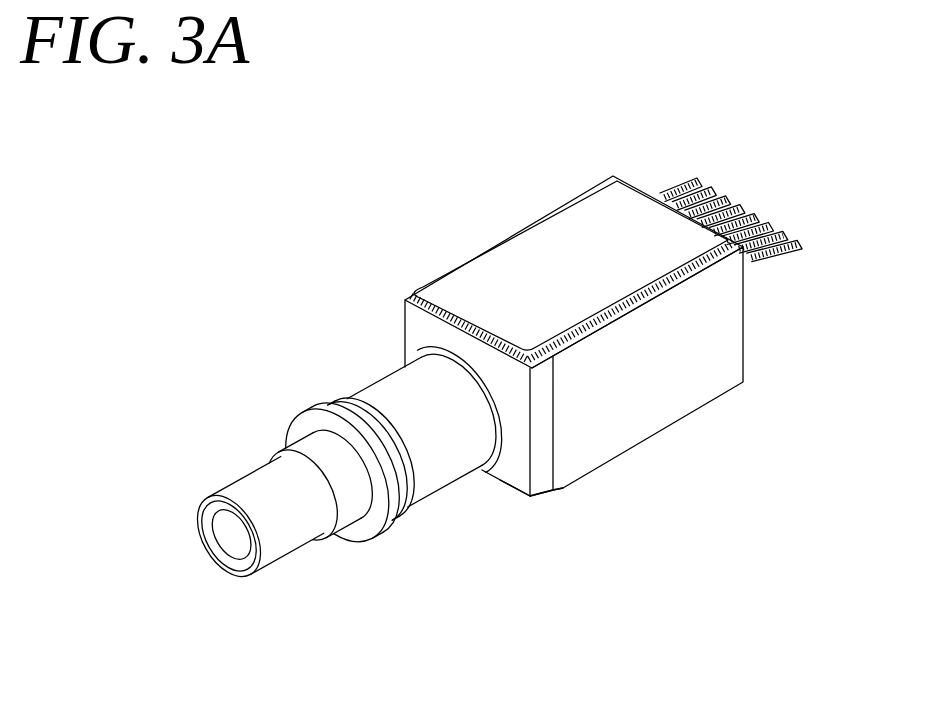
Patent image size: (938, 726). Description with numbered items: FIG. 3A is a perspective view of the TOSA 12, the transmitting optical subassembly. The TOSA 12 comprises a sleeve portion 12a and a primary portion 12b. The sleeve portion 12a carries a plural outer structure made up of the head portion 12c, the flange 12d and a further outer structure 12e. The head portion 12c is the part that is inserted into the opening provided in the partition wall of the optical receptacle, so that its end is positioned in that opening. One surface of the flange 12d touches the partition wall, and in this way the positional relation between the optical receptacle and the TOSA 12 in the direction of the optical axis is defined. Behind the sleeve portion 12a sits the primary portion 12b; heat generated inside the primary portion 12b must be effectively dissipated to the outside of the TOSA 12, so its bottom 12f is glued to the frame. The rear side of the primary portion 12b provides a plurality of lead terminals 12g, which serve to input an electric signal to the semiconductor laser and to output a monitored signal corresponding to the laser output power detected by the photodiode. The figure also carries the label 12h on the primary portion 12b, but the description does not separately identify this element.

The TOSA 12 is at (692, 130).
The sleeve portion 12a is at (518, 523).
The primary portion 12b is at (755, 390).
The head portion 12c is at (252, 487).
The flange 12d is at (322, 407).
The outer structure 12e is at (397, 377).
The bottom 12f is at (538, 513).
The lead terminals 12g is at (705, 168).
The lid / top cover 12h is at (502, 277).